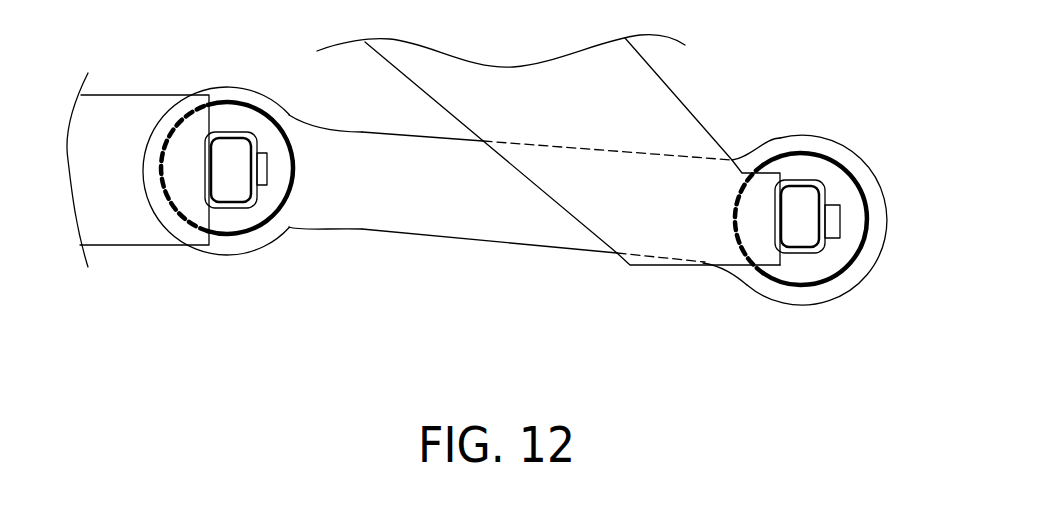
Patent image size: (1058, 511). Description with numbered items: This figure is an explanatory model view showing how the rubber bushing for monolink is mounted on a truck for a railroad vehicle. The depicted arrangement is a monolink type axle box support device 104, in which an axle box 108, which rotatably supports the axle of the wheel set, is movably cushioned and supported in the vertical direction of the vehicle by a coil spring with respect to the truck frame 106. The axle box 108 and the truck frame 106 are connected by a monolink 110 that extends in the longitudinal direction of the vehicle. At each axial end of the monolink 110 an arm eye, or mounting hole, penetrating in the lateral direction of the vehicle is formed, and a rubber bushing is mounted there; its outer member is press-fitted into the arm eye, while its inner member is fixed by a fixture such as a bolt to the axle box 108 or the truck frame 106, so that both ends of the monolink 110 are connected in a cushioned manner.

The monolink type axle box support device 104 is at (715, 120).
The truck frame 106 is at (642, 90).
The axle box 108 is at (123, 230).
The monolink 110 is at (482, 215).